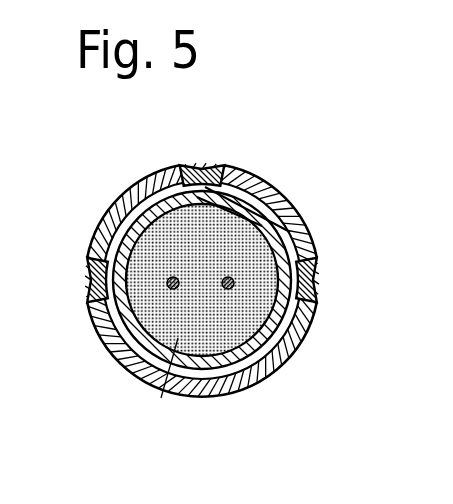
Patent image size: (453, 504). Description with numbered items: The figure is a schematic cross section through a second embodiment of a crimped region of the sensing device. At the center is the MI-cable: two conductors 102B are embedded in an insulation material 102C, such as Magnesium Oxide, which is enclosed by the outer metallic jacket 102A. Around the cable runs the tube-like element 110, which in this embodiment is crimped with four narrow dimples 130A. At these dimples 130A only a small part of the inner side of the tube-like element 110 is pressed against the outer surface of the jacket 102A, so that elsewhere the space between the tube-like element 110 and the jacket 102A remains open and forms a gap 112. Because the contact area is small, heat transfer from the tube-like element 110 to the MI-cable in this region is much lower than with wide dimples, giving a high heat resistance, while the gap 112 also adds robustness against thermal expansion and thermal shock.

The tube-like element 110 is at (104, 206).
The gap 112 is at (110, 353).
The dimples 130A is at (202, 166).
The outer metallic jacket 102A is at (286, 202).
The conductors 102B is at (180, 288).
The insulation material 102C is at (178, 338).